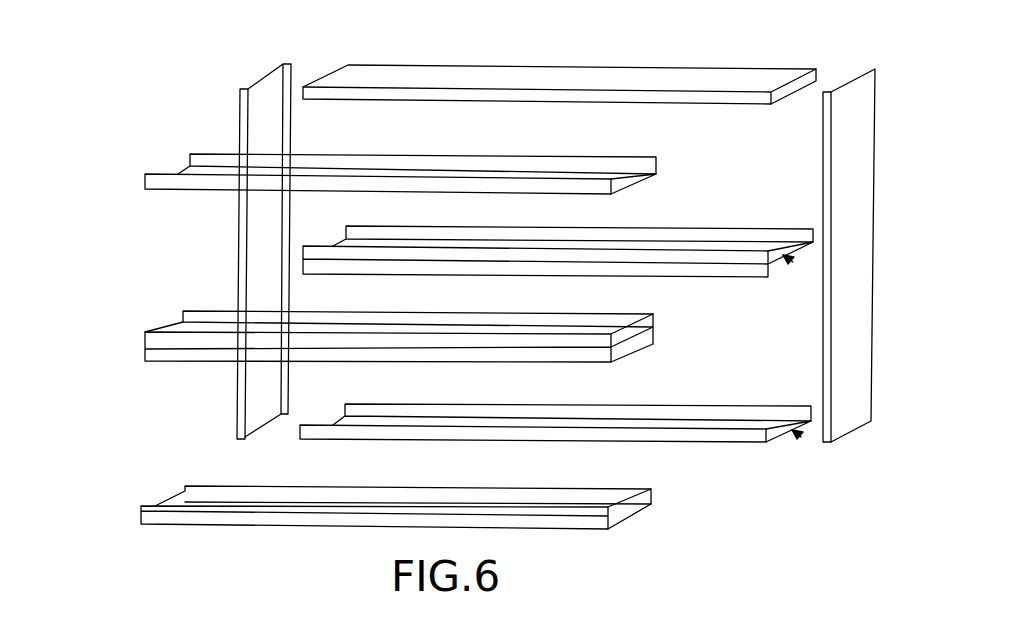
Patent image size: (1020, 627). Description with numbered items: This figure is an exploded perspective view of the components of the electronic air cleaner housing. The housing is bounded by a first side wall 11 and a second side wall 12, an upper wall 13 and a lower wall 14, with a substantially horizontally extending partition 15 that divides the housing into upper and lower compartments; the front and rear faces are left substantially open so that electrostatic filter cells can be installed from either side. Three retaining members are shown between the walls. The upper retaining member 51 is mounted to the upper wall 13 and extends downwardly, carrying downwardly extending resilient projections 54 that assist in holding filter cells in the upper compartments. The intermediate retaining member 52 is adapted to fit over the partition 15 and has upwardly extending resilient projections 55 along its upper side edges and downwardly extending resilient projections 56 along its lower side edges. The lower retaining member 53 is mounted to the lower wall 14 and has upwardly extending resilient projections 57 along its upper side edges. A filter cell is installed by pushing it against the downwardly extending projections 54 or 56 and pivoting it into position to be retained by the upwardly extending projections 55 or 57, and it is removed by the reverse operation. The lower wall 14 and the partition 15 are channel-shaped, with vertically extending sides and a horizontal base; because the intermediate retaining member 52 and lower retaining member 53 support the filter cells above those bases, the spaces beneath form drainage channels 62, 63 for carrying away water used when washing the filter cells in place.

The first side wall 11 is at (866, 245).
The second side wall 12 is at (257, 108).
The upper wall 13 is at (572, 66).
The lower wall 14 is at (714, 444).
The partition 15 is at (717, 279).
The upper retaining member 51 is at (381, 198).
The intermediate retaining member 52 is at (377, 342).
The lower retaining member 53 is at (351, 479).
The downwardly extending resilient projections 54 is at (170, 191).
The upwardly extending resilient projections 55 is at (198, 310).
The downwardly extending resilient projections 56 is at (165, 364).
The upwardly extending resilient projections 57 is at (187, 488).
The drainage channel 62 is at (791, 262).
The drainage channel 63 is at (800, 437).